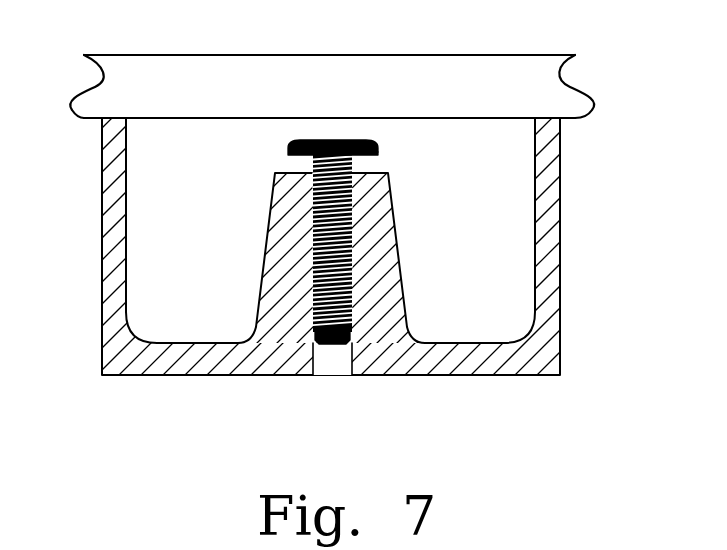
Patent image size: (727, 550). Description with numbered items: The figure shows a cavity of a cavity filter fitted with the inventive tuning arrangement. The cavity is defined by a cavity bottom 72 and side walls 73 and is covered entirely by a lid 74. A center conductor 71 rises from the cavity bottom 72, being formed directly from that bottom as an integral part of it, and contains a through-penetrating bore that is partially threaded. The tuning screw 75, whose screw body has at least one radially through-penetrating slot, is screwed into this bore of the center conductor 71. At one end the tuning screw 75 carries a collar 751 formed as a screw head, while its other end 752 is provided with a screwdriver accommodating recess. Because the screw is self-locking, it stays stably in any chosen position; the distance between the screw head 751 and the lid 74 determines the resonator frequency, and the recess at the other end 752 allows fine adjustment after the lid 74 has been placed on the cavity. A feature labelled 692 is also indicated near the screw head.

The lid 74 is at (527, 56).
The side walls 73 is at (158, 250).
The cavity bottom 72 is at (475, 317).
The center conductor 71 is at (265, 246).
The tuning screw 75 is at (352, 240).
The collar 751 is at (333, 137).
The other end 752 is at (338, 347).
The fastening hole 692 is at (378, 142).